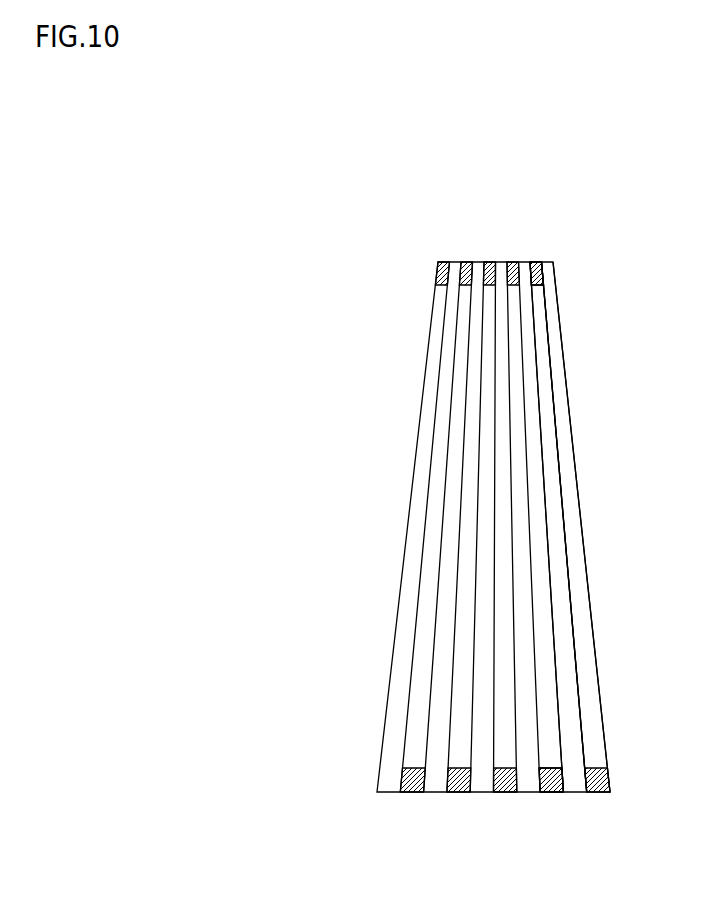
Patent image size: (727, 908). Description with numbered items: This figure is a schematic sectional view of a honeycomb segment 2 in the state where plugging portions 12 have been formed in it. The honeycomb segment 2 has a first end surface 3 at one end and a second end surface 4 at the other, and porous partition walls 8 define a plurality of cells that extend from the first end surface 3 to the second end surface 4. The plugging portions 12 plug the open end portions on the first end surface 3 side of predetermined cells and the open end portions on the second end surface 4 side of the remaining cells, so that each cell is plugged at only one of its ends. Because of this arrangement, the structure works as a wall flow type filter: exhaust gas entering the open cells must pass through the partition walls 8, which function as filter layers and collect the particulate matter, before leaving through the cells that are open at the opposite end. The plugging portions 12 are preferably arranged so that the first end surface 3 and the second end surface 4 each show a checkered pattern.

The honeycomb segment 2 is at (389, 529).
The first end surface 3 is at (500, 262).
The second end surface 4 is at (486, 793).
The porous partition walls 8 is at (550, 573).
The plugging portion 12 is at (538, 262).